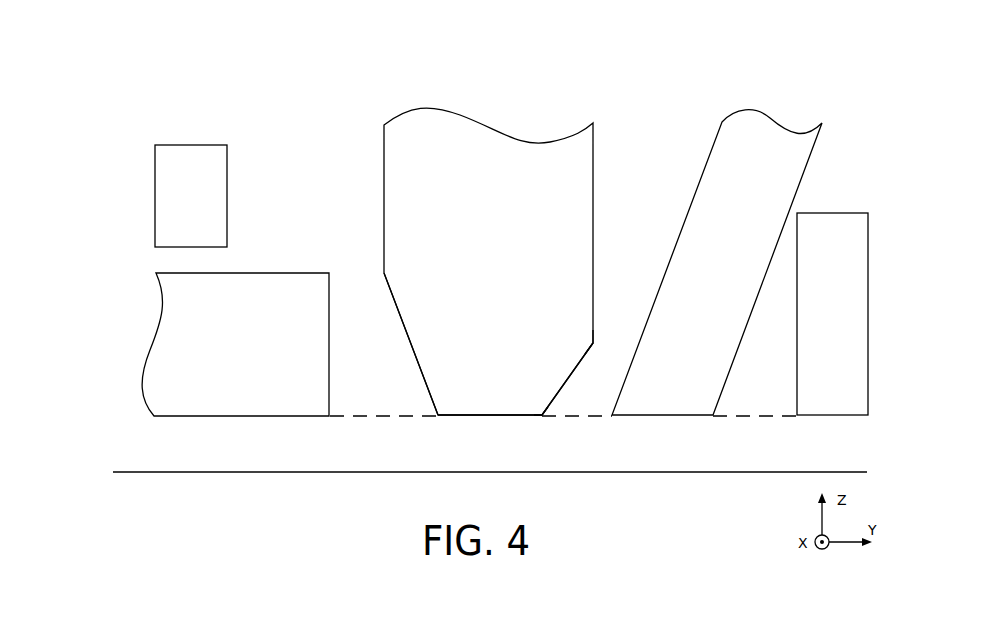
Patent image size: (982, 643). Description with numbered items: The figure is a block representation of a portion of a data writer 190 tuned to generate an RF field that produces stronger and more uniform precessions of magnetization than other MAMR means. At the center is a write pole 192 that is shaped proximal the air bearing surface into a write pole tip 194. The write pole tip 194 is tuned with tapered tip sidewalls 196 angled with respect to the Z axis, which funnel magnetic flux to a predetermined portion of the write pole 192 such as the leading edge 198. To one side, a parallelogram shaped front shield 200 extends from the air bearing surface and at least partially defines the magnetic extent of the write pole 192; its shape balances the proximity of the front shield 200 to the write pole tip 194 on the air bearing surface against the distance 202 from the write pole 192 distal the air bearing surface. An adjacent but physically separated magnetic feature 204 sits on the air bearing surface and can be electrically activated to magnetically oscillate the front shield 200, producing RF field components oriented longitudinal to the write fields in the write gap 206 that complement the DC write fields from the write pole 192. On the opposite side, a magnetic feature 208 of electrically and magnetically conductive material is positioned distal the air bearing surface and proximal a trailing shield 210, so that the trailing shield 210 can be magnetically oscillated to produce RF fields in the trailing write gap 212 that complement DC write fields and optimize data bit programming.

The data writer 190 is at (160, 80).
The write pole 192 is at (472, 158).
The write pole tip 194 is at (490, 408).
The tapered tip sidewalls 196 is at (400, 312).
The leading edge 198 is at (545, 424).
The front shield 200 is at (701, 277).
The distance 202 is at (690, 206).
The magnetic feature 204 is at (816, 323).
The write gap 206 is at (604, 340).
The magnetic feature 208 is at (174, 205).
The trailing shield 210 is at (229, 355).
The trailing write gap 212 is at (352, 270).